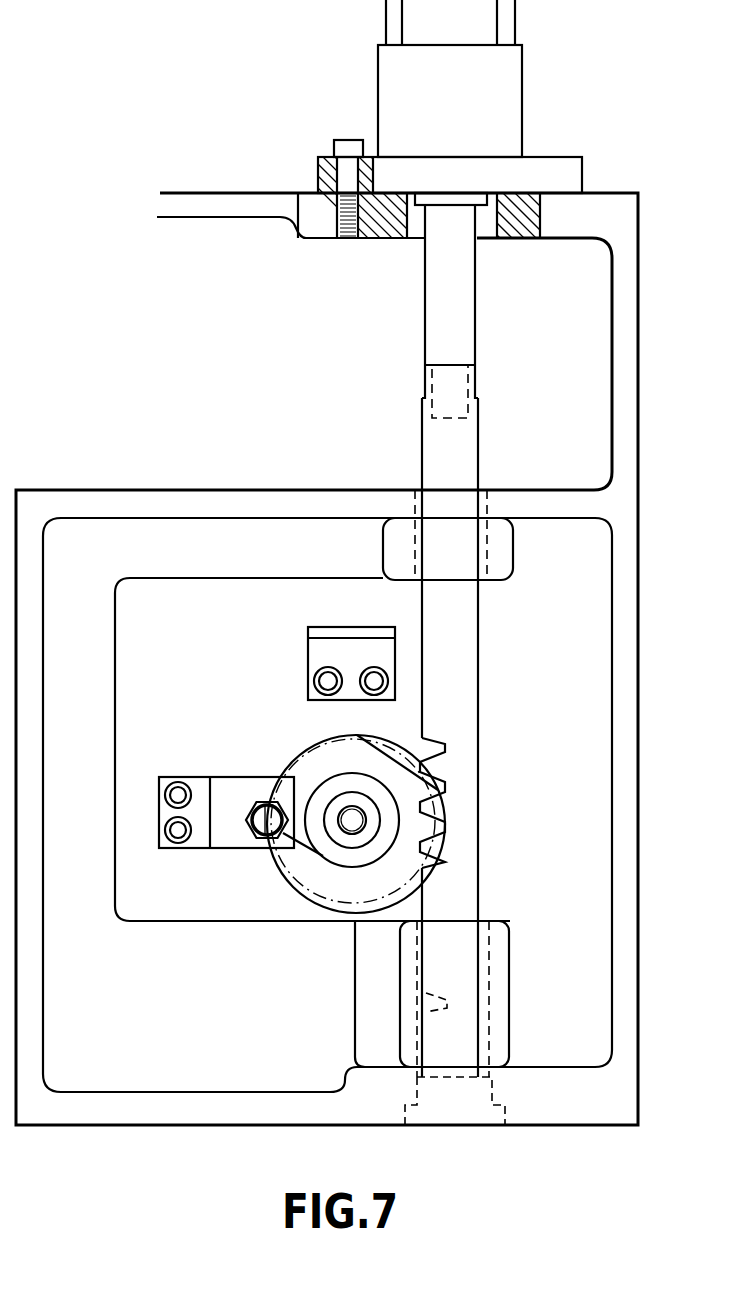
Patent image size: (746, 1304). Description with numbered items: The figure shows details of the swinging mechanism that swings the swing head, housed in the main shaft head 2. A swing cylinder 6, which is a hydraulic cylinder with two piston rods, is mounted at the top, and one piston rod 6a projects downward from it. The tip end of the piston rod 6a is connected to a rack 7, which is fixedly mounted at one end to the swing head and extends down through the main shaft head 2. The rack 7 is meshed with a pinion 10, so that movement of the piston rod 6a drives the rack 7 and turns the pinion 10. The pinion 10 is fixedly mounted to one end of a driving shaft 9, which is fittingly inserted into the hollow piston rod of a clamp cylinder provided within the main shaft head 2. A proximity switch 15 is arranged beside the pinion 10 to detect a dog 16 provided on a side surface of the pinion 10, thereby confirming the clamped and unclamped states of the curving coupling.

The main shaft head 2 is at (630, 418).
The swing cylinder 6 is at (512, 107).
The piston rod 6a is at (460, 315).
The rack 7 is at (465, 630).
The driving shaft 9 is at (352, 820).
The pinion 10 is at (427, 780).
The proximity switch 15 is at (262, 805).
The dog 16 is at (313, 752).